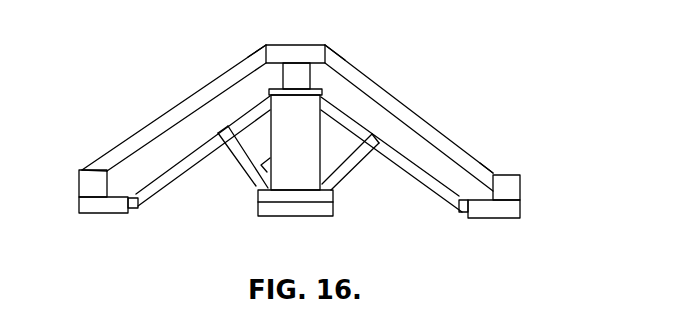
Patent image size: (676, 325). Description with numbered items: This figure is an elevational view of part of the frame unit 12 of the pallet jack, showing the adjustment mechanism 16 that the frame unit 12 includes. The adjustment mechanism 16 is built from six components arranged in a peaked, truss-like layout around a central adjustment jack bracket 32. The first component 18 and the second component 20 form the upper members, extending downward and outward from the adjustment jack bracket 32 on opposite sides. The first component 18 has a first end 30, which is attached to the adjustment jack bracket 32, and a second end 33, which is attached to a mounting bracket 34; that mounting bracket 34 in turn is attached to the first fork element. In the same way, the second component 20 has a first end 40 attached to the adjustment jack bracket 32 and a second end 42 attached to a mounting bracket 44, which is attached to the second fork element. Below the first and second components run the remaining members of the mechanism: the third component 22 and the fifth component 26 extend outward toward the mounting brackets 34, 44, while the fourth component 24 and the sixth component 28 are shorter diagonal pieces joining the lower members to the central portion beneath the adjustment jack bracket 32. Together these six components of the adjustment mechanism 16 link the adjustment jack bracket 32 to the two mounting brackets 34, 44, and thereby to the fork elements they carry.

The frame unit 12 is at (442, 126).
The adjustment mechanism 16 is at (221, 228).
The first component 18 is at (390, 94).
The second component 20 is at (152, 122).
The third component 22 is at (423, 184).
The fourth component 24 is at (345, 178).
The fifth component 26 is at (176, 180).
The sixth component 28 is at (239, 165).
The first end 30 is at (335, 58).
The adjustment jack bracket 32 is at (299, 44).
The second end 33 is at (485, 168).
The mounting bracket 34 is at (512, 187).
The first end 40 is at (249, 60).
The second end 42 is at (108, 158).
The mounting bracket 44 is at (90, 182).